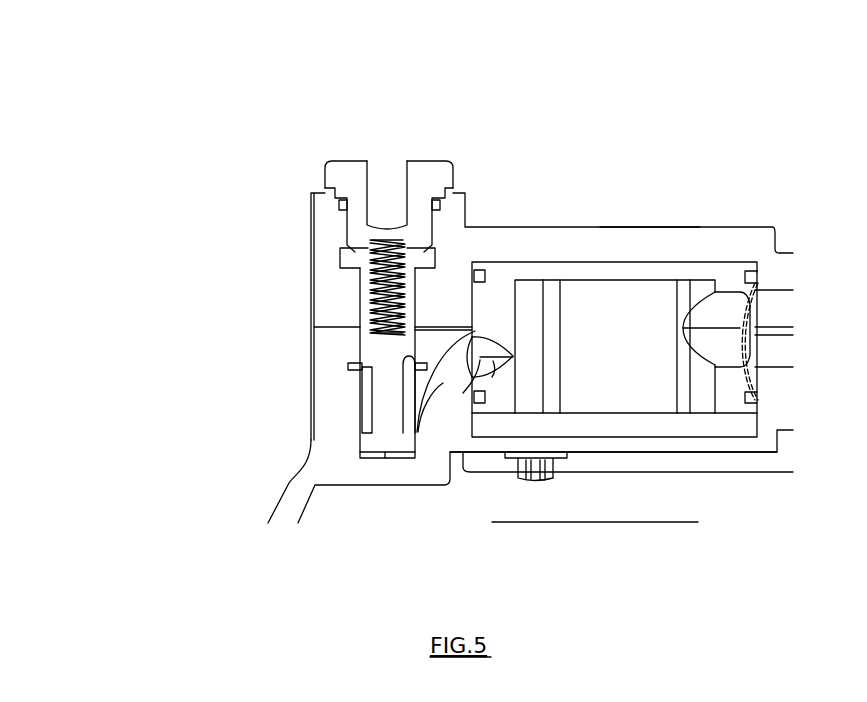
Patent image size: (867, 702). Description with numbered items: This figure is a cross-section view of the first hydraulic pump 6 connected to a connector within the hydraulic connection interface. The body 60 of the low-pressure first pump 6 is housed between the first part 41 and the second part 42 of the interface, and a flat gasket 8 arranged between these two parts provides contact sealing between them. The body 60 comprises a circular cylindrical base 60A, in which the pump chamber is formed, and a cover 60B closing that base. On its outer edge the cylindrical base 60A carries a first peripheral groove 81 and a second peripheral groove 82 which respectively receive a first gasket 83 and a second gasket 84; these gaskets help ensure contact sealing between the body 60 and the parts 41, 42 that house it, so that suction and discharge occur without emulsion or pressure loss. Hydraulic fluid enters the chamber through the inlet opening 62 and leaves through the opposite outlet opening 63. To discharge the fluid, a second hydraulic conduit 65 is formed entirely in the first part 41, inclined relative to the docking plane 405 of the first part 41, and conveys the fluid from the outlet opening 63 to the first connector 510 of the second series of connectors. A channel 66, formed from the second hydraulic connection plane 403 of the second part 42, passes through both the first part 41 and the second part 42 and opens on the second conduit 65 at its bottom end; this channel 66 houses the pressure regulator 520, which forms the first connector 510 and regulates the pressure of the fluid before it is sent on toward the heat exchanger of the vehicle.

The first hydraulic pump 6 is at (610, 452).
The flat gasket 8 is at (312, 326).
The first part 41 is at (281, 353).
The second part 42 is at (281, 238).
The body 60 is at (538, 262).
The circular cylindrical base 60A is at (590, 272).
The cover 60B is at (700, 423).
The inlet opening 62 is at (730, 303).
The outlet opening 63 is at (473, 334).
The second hydraulic conduit 65 is at (441, 388).
The channel 66 is at (357, 290).
The first peripheral groove 81 is at (658, 470).
The second peripheral groove 82 is at (670, 171).
The first gasket 83 is at (757, 398).
The second gasket 84 is at (755, 273).
The second hydraulic connection plane 403 is at (633, 225).
The docking plane 405 is at (433, 323).
The first connector 510 is at (290, 199).
The pressure regulator 520 is at (387, 258).